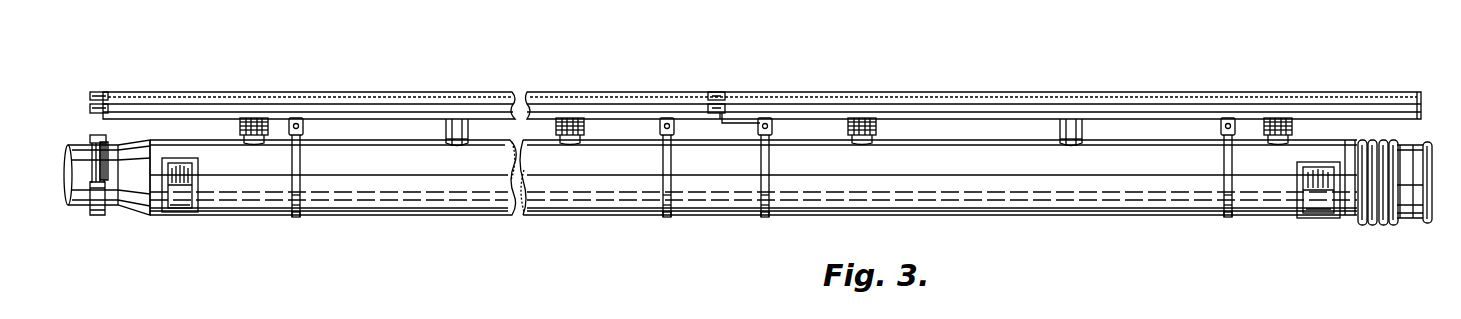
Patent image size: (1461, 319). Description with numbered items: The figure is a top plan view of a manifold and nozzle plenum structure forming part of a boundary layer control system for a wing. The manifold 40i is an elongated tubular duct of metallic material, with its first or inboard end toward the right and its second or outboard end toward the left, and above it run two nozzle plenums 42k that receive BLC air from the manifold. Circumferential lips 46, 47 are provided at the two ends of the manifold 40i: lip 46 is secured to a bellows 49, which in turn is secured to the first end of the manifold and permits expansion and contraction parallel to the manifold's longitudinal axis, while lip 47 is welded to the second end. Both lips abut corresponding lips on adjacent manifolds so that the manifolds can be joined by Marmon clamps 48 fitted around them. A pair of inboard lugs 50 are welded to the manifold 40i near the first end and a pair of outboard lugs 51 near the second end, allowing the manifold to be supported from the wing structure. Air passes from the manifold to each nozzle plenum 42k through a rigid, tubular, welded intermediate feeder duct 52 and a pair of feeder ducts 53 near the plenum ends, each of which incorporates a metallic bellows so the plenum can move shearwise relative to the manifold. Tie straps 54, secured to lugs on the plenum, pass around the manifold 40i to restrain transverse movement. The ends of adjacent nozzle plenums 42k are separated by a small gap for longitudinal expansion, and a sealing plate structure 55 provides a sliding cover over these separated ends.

The manifold 40i is at (1025, 211).
The nozzle plenum 42k is at (388, 101).
The circumferential lip 46 is at (1426, 225).
The circumferential lip 47 is at (105, 156).
The Marmon clamp 48 is at (95, 224).
The bellows 49 is at (1379, 226).
The inboard lug 50 is at (1316, 210).
The outboard lug 51 is at (186, 206).
The feeder duct 52 is at (462, 119).
The feeder duct 53 is at (257, 129).
The tie strap 54 is at (296, 217).
The sealing plate structure 55 is at (131, 68).